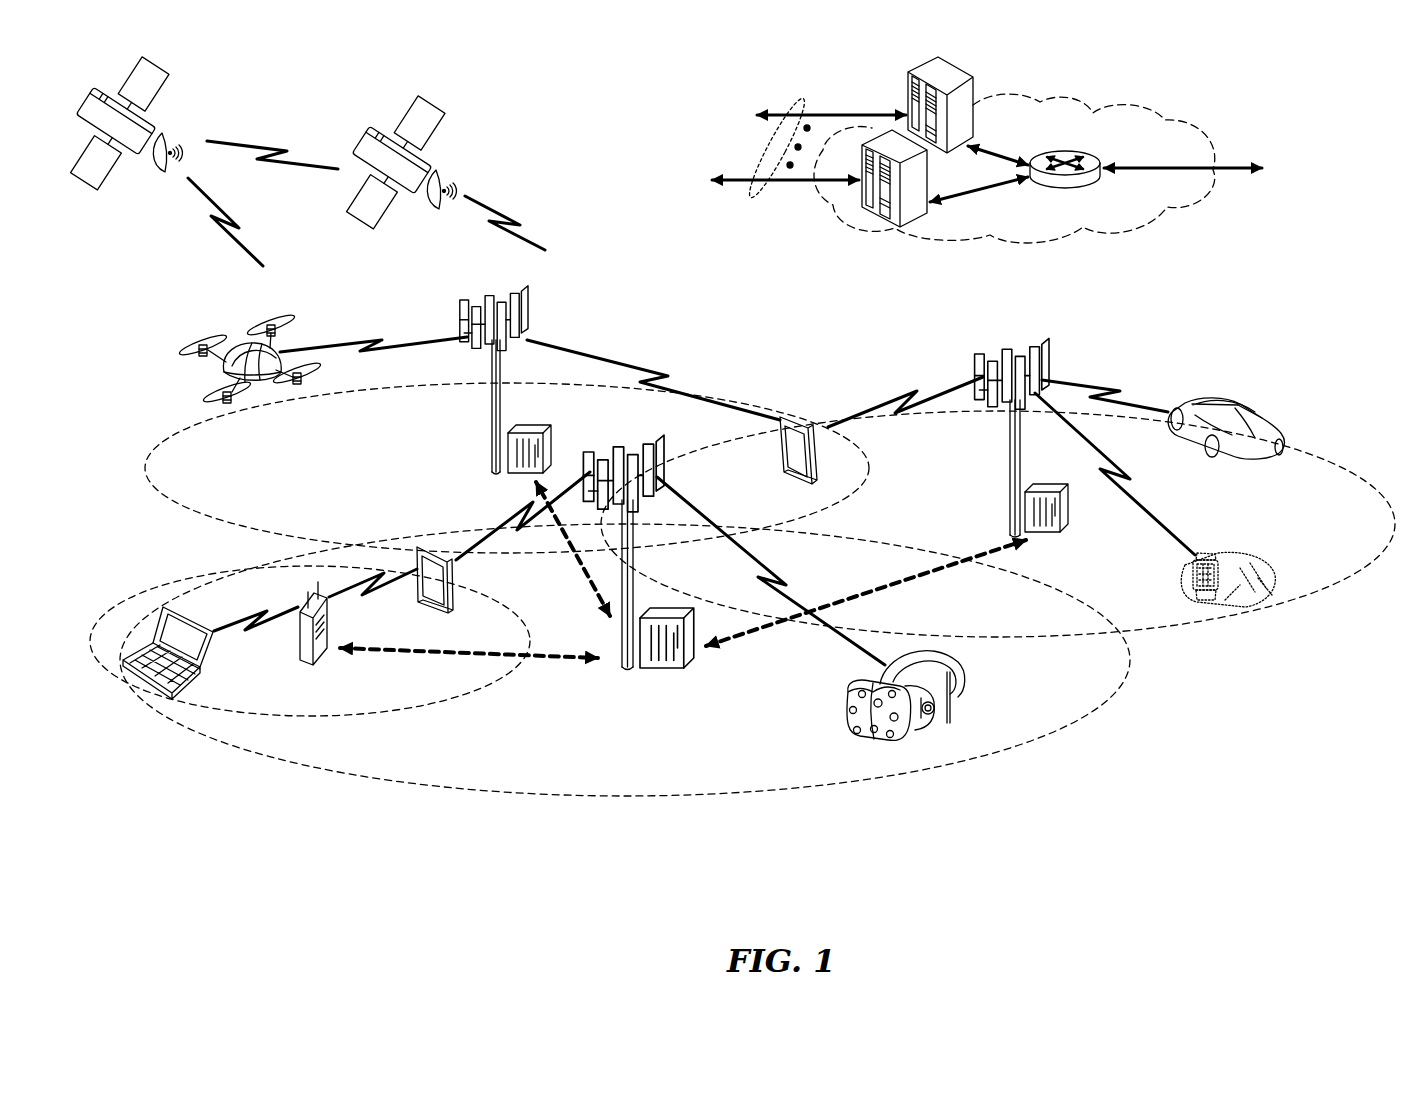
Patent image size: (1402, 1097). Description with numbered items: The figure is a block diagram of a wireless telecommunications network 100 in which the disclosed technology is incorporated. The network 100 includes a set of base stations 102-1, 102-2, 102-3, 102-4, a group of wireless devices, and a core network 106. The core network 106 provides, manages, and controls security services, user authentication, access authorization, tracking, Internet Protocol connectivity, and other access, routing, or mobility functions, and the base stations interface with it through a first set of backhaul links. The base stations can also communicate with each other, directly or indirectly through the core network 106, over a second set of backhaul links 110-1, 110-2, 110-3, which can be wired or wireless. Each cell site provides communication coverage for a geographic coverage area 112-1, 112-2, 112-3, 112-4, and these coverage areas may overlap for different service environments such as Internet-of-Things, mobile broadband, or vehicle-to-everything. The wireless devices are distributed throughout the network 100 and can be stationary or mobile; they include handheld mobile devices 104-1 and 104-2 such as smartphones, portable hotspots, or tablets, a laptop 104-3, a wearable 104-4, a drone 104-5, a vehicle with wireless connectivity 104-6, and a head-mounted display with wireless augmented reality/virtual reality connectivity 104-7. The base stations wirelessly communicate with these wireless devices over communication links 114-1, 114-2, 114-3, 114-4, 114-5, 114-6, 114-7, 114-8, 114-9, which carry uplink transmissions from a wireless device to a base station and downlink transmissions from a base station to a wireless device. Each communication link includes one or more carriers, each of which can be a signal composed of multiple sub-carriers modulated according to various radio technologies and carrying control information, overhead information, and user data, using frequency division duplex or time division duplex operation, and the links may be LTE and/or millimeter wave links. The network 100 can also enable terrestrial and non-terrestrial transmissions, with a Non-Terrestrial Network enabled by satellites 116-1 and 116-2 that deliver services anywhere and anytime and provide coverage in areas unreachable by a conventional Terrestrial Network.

The wireless telecommunications network 100 is at (1336, 124).
The base station 102-1 is at (618, 667).
The base station 102-2 is at (490, 420).
The base station 102-3 is at (1005, 455).
The base station 102-4 is at (300, 645).
The handheld mobile device 104-1 is at (493, 590).
The handheld mobile device 104-2 is at (785, 455).
The laptop 104-3 is at (150, 685).
The wearable 104-4 is at (1205, 565).
The drone 104-5 is at (260, 385).
The vehicle with wireless connectivity 104-6 is at (1245, 408).
The head-mounted display 104-7 is at (1005, 672).
The core network 106 is at (1095, 238).
The backhaul link 110-1 is at (385, 655).
The backhaul link 110-2 is at (925, 575).
The backhaul link 110-3 is at (585, 585).
The geographic coverage area 112-1 is at (555, 797).
The geographic coverage area 112-2 is at (430, 716).
The geographic coverage area 112-3 is at (215, 531).
The geographic coverage area 112-4 is at (1310, 456).
The communication link 114-1 is at (790, 580).
The communication link 114-2 is at (520, 525).
The communication link 114-3 is at (225, 628).
The communication link 114-4 is at (370, 595).
The communication link 114-5 is at (358, 342).
The communication link 114-6 is at (660, 378).
The communication link 114-7 is at (898, 405).
The communication link 114-8 is at (1130, 480).
The communication link 114-9 is at (1105, 393).
The satellite 116-1 is at (170, 140).
The satellite 116-2 is at (455, 180).